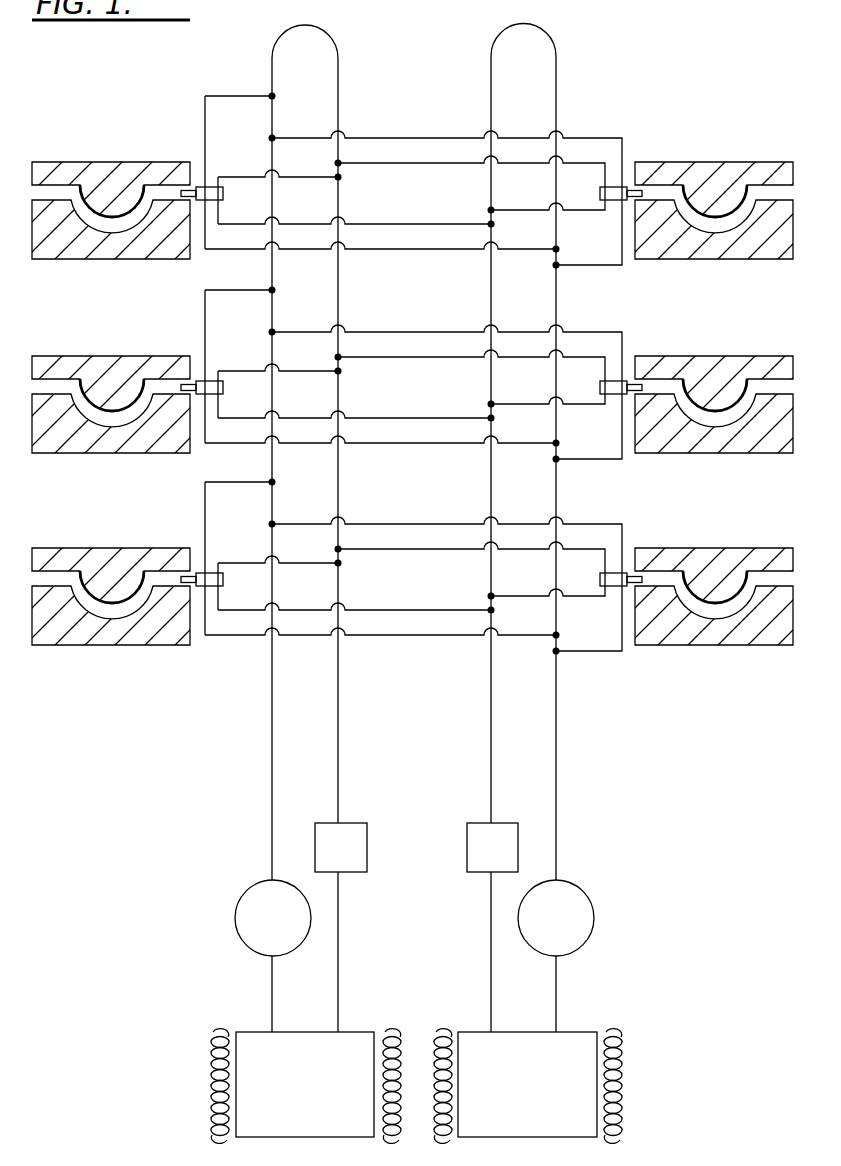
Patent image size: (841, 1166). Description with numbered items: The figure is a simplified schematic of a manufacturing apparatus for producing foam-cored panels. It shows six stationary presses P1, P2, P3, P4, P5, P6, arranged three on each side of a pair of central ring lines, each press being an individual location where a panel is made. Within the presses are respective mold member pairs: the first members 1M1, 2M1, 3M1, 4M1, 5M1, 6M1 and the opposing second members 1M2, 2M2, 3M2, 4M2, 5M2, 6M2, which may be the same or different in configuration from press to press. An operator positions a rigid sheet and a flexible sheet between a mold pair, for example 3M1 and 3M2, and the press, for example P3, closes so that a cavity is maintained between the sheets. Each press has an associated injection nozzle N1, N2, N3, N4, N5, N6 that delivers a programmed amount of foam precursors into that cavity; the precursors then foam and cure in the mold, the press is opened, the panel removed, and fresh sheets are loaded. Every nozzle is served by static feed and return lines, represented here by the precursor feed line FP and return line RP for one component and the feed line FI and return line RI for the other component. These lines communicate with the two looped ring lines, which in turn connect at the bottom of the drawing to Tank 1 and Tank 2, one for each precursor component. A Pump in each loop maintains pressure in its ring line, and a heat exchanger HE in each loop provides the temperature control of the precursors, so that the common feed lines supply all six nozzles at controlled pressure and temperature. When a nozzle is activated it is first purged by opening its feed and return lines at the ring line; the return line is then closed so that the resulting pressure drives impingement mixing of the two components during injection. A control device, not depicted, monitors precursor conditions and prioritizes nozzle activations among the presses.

The press P1 is at (664, 533).
The press P2 is at (680, 345).
The press P3 is at (699, 152).
The press P4 is at (104, 158).
The press P5 is at (68, 352).
The press P6 is at (93, 542).
The mold member 1M1 is at (746, 550).
The mold member 2M1 is at (748, 360).
The mold member 3M1 is at (752, 165).
The mold member 4M1 is at (152, 170).
The mold member 5M1 is at (132, 368).
The mold member 6M1 is at (150, 558).
The mold member 1M2 is at (740, 628).
The mold member 2M2 is at (740, 437).
The mold member 3M2 is at (740, 244).
The mold member 4M2 is at (148, 244).
The mold member 5M2 is at (128, 440).
The mold member 6M2 is at (136, 632).
The injection nozzle N1 is at (616, 573).
The injection nozzle N2 is at (602, 381).
The injection nozzle N3 is at (600, 187).
The injection nozzle N4 is at (226, 187).
The injection nozzle N5 is at (228, 381).
The injection nozzle N6 is at (230, 573).
The precursor feed line FP is at (586, 524).
The precursor return line RP is at (575, 549).
The precursor return line RI is at (587, 596).
The precursor feed line FI is at (592, 651).
The heat exchanger HE is at (416, 847).
The pump Pump is at (414, 918).
The tank Tank 1 is at (306, 1086).
The tank Tank 2 is at (528, 1086).